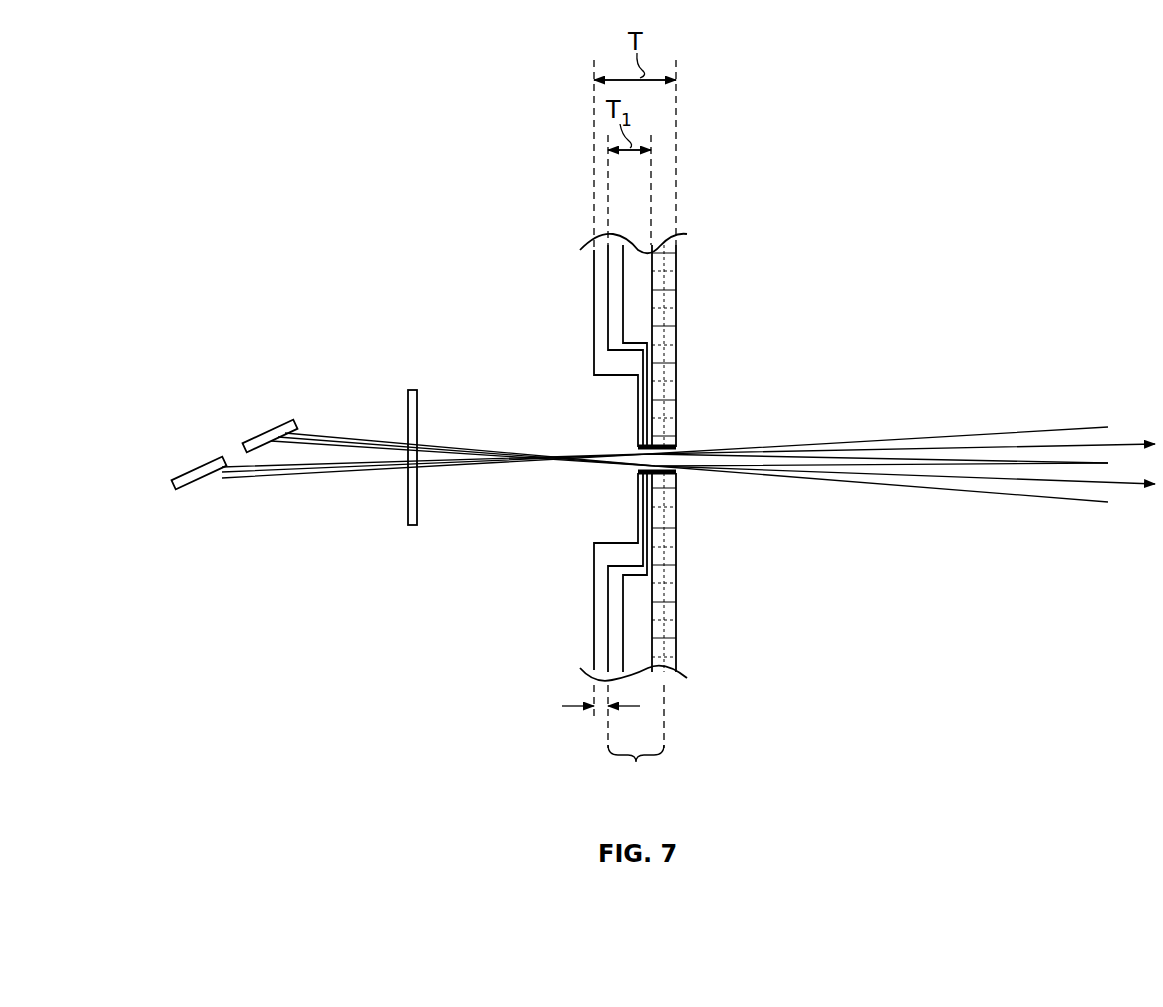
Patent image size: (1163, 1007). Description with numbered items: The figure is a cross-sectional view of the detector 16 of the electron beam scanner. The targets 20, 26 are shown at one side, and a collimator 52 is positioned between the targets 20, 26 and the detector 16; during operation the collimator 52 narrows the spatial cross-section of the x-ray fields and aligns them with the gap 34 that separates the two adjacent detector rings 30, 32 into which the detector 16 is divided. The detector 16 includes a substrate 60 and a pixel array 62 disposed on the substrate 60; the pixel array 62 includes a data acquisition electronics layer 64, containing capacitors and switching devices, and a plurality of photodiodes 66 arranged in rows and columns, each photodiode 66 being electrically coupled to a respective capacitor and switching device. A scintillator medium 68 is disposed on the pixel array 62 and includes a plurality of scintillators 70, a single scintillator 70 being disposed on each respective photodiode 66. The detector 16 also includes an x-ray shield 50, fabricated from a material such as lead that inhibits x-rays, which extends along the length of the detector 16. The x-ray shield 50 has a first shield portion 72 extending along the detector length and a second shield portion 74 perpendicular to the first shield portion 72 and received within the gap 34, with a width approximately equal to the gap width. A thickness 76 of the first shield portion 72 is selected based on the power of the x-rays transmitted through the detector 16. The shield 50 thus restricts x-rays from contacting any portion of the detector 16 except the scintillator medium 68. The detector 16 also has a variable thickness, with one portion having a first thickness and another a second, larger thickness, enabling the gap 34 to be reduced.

The detector 16 is at (705, 432).
The target 20 is at (270, 425).
The target 26 is at (195, 465).
The detector ring 30 is at (1127, 442).
The detector ring 32 is at (1128, 486).
The gap 34 is at (692, 443).
The x-ray shield 50 is at (593, 312).
The collimator 52 is at (407, 505).
The substrate 60 is at (617, 238).
The pixel array 62 is at (636, 769).
The data acquisition electronics layer 64 is at (638, 250).
The photodiodes 66 is at (660, 250).
The scintillator medium 68 is at (677, 272).
The scintillators 70 is at (670, 617).
The first shield portion 72 is at (616, 368).
The second shield portion 74 is at (637, 448).
The thickness 76 is at (576, 708).